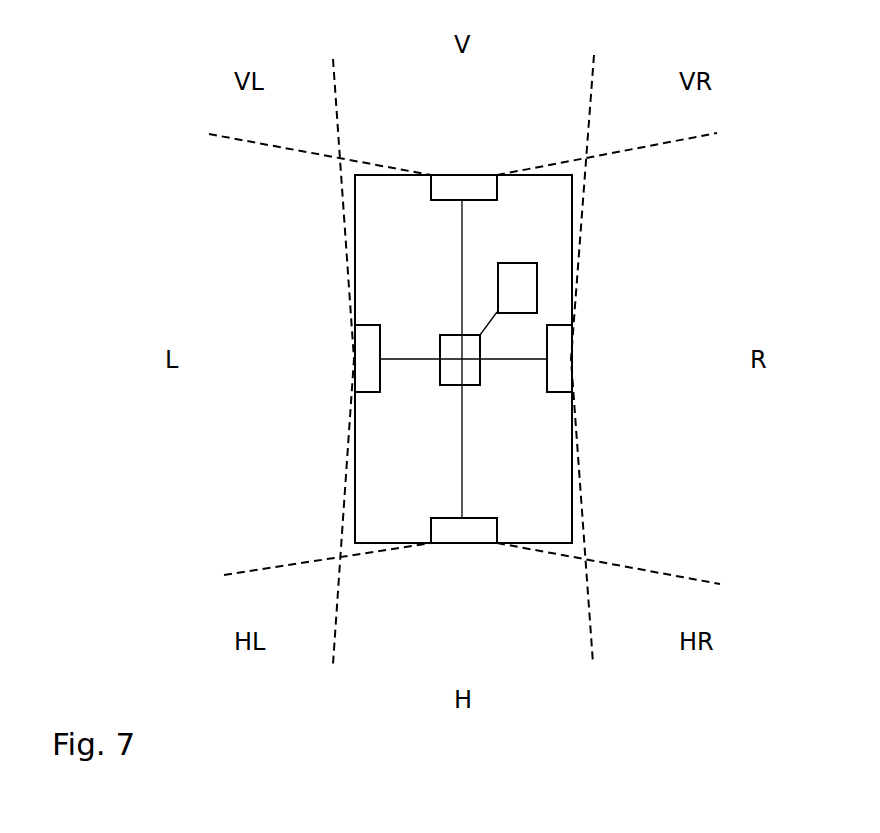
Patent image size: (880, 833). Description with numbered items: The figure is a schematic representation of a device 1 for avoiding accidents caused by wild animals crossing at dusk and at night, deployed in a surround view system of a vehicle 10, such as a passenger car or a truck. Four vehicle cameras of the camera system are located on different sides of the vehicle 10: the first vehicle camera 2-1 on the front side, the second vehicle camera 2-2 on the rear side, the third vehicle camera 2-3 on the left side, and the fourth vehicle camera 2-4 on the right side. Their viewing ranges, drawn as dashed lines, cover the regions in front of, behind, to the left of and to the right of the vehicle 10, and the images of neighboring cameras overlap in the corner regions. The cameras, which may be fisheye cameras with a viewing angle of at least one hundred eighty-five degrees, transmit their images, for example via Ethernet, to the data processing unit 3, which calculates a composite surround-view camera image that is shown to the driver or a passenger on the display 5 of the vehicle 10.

The device 1 is at (464, 359).
The vehicle 10 is at (573, 229).
The first vehicle camera 2-1 is at (488, 188).
The second vehicle camera 2-2 is at (478, 527).
The third vehicle camera 2-3 is at (367, 353).
The fourth vehicle camera 2-4 is at (557, 373).
The data processing unit 3 is at (448, 377).
The display 5 is at (521, 288).